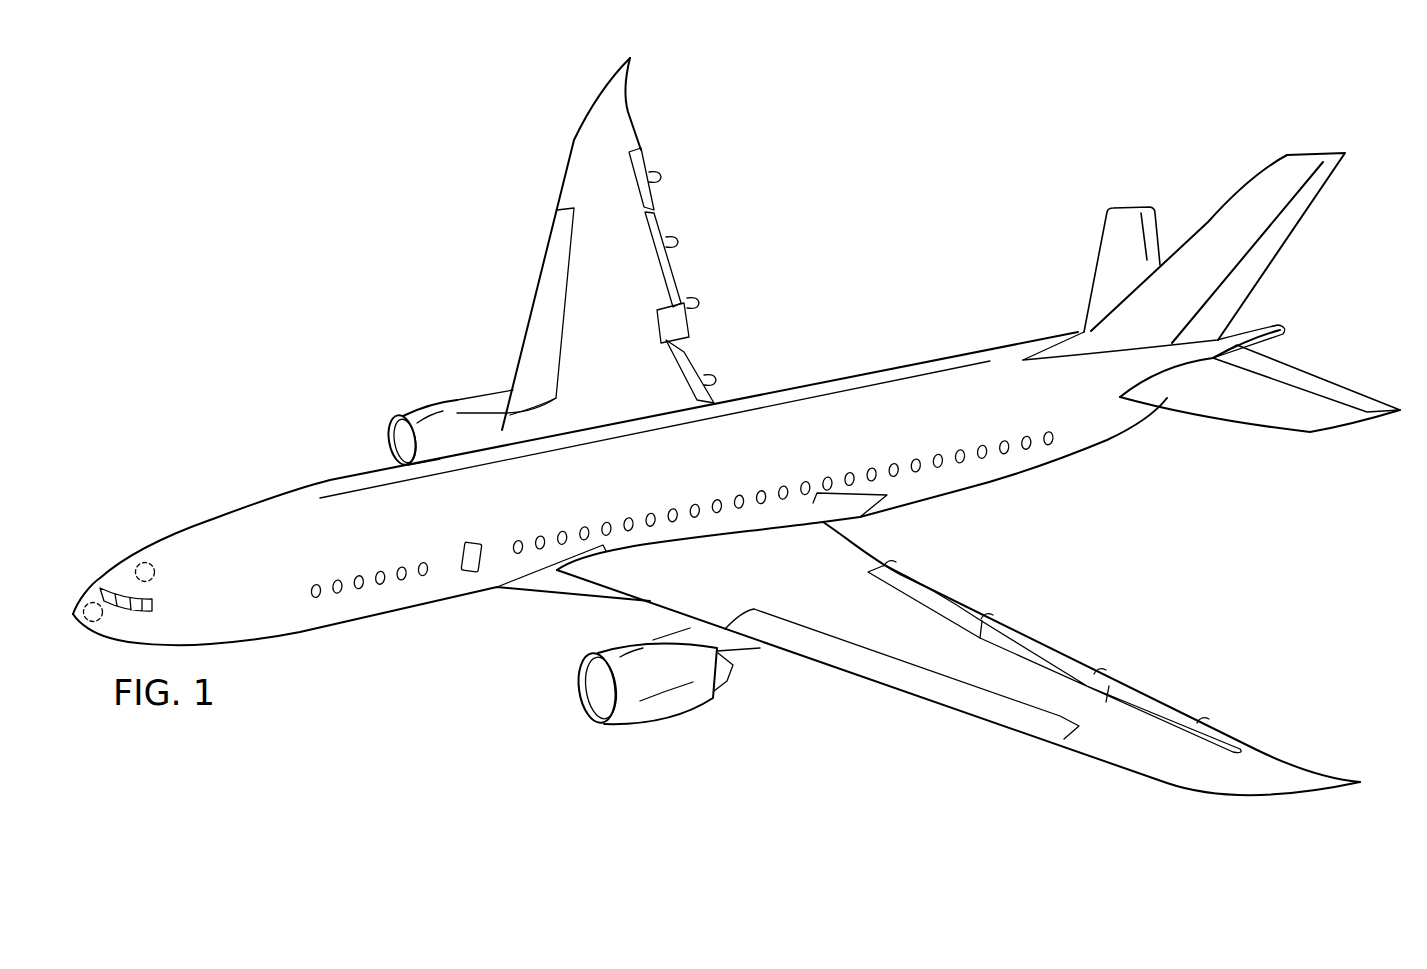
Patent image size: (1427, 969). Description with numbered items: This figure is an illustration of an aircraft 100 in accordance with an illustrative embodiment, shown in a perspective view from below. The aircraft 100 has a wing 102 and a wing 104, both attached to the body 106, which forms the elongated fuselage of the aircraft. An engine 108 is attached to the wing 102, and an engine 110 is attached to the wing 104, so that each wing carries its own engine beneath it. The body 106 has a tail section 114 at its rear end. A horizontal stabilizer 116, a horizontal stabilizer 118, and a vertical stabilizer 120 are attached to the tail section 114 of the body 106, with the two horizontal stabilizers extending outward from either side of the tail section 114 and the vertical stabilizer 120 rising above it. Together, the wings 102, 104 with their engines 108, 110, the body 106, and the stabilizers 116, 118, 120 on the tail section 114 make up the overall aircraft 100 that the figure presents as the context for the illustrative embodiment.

The aircraft 100 is at (375, 306).
The wing 102 is at (631, 97).
The wing 104 is at (1207, 792).
The body 106 is at (884, 368).
The engine 108 is at (430, 400).
The engine 110 is at (666, 713).
The tail section 114 is at (1314, 305).
The horizontal stabilizer 116 is at (1088, 258).
The horizontal stabilizer 118 is at (1262, 422).
The vertical stabilizer 120 is at (1303, 148).